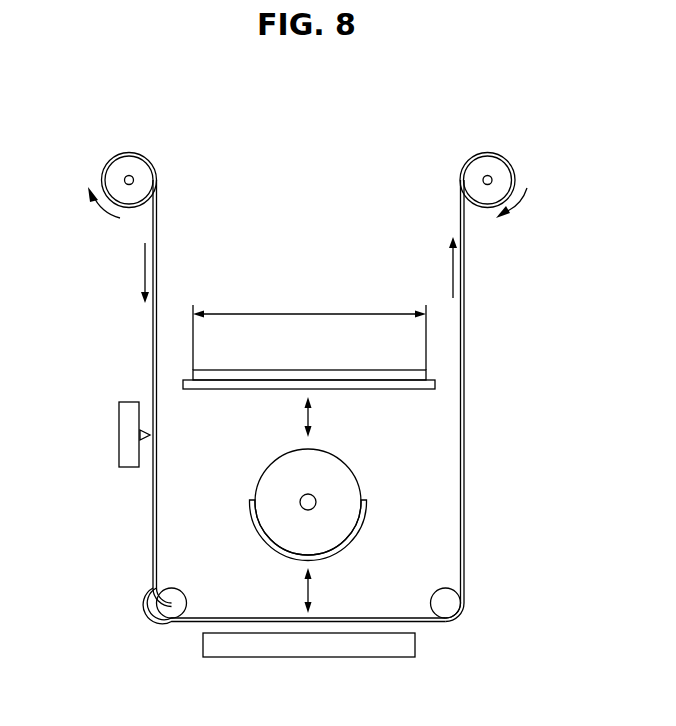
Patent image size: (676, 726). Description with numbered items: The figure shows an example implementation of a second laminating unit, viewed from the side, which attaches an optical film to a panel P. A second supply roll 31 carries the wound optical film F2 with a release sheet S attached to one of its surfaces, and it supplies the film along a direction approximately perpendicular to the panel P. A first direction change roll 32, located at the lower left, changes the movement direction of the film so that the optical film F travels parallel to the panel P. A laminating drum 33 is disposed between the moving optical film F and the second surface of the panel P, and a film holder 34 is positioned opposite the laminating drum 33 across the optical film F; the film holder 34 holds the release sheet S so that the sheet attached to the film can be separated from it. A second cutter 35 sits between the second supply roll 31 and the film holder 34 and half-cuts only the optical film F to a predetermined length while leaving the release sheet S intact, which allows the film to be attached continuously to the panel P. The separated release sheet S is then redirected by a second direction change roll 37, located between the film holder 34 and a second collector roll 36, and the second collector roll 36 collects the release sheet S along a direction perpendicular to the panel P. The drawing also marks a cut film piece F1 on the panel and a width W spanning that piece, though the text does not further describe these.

The second supply roll 31 is at (127, 152).
The first direction change roll 32 is at (178, 592).
The laminating drum 33 is at (353, 468).
The film holder 34 is at (358, 658).
The second cutter 35 is at (118, 420).
The second collector roll 36 is at (485, 152).
The second direction change roll 37 is at (440, 592).
The optical film F is at (152, 322).
The release sheet S is at (464, 323).
The film piece F1 is at (223, 370).
The optical film F2 is at (368, 505).
The panel P is at (205, 390).
The width W is at (309, 329).